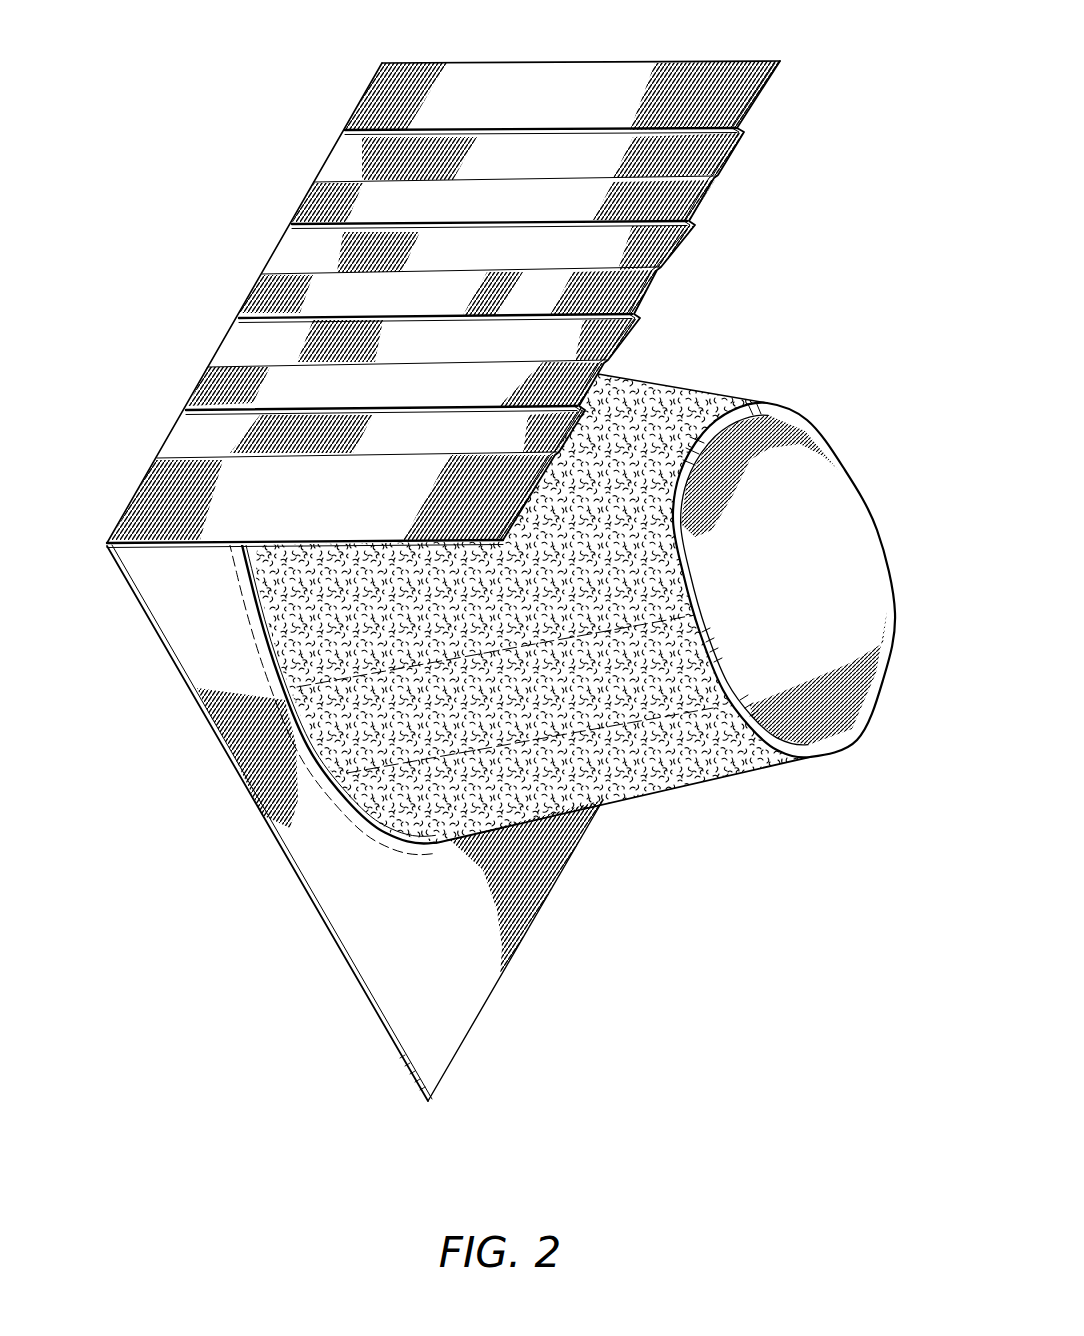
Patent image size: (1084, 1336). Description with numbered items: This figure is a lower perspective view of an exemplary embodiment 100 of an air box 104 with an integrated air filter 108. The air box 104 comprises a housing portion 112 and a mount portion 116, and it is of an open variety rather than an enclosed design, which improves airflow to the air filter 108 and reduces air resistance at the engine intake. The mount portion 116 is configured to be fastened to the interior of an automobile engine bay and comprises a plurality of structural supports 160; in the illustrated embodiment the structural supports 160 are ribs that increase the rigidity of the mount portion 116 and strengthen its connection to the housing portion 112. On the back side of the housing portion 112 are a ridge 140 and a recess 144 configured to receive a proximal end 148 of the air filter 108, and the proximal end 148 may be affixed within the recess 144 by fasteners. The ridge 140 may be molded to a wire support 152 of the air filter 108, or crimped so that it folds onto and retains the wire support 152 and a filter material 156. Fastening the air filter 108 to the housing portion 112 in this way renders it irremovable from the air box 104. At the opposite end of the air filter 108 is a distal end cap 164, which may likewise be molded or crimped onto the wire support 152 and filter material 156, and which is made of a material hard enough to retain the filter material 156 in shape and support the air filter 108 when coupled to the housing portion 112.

The exemplary embodiment 100 is at (176, 80).
The air box 104 is at (770, 38).
The air filter 108 is at (792, 376).
The housing portion 112 is at (352, 977).
The mount portion 116 is at (280, 253).
The ridge 140 is at (353, 810).
The recess 144 is at (450, 837).
The proximal end 148 is at (337, 712).
The wire support 152 is at (718, 720).
The filter material 156 is at (698, 775).
The structural supports 160 is at (698, 207).
The distal end cap 164 is at (826, 502).